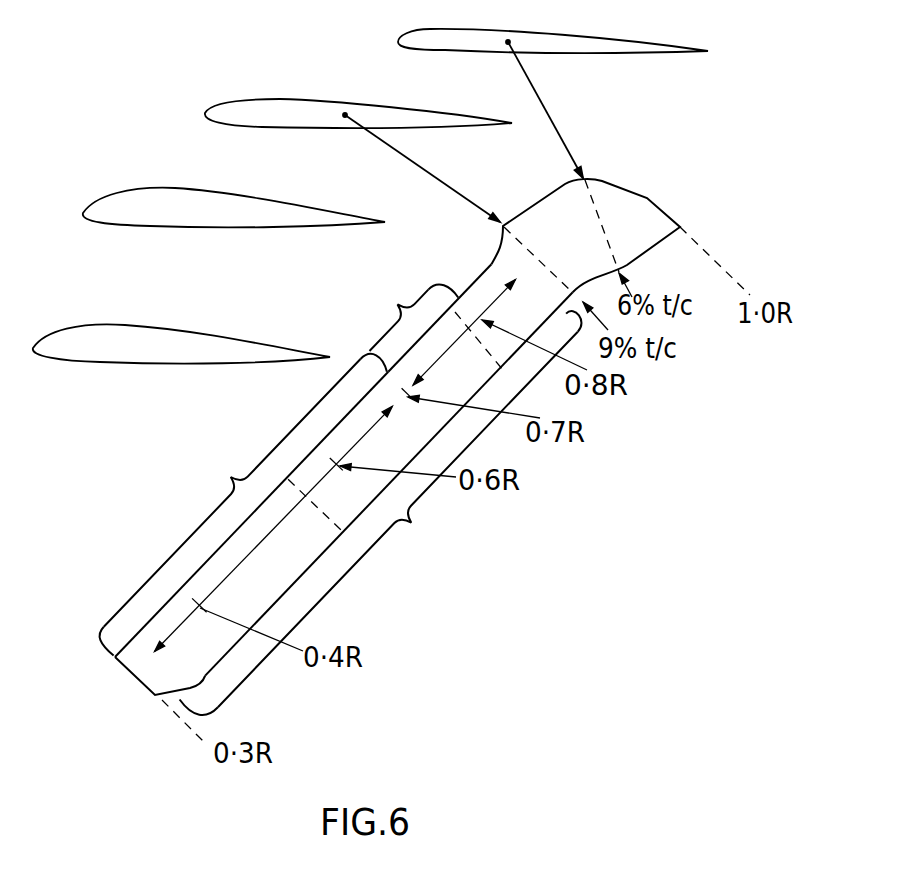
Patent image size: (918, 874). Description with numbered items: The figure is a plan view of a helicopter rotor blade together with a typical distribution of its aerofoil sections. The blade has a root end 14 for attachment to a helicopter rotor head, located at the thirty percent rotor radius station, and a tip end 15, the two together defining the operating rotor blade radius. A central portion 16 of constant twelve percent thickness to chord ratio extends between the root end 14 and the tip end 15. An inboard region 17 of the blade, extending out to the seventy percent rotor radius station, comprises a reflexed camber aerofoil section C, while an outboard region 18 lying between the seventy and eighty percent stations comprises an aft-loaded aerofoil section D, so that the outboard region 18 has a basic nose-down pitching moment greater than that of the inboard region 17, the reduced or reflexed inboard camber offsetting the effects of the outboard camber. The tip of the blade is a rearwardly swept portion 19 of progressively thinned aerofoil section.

The root end 14 is at (133, 677).
The tip end 15 is at (650, 197).
The central portion 16 is at (381, 503).
The inboard region 17 is at (244, 505).
The outboard region 18 is at (425, 318).
The rearwardly swept portion 19 is at (543, 220).
The reflexed camber aerofoil section C is at (284, 478).
The aft-loaded aerofoil section D is at (448, 317).